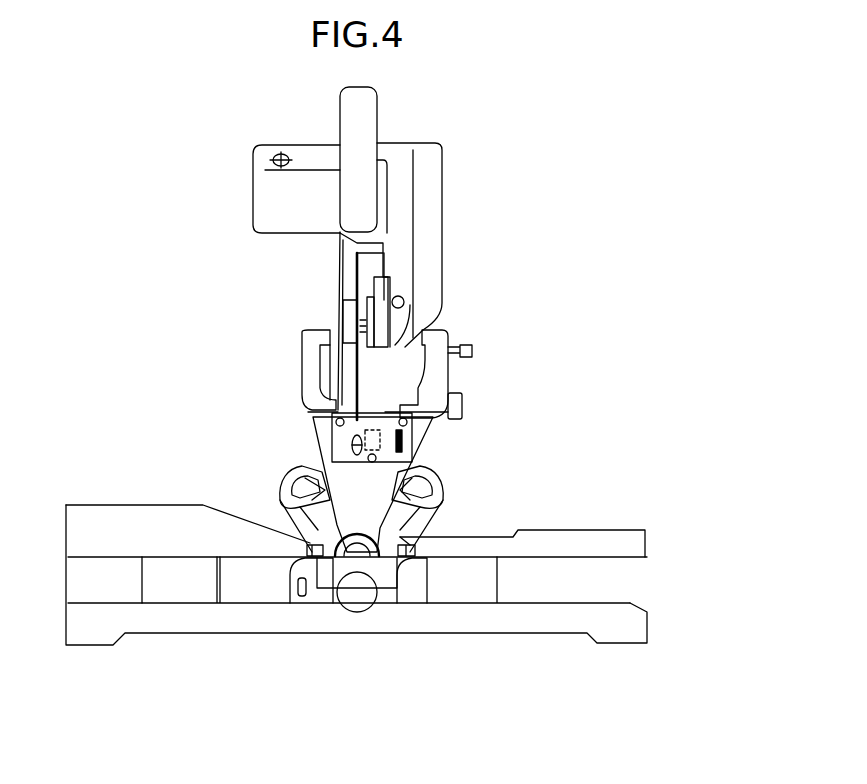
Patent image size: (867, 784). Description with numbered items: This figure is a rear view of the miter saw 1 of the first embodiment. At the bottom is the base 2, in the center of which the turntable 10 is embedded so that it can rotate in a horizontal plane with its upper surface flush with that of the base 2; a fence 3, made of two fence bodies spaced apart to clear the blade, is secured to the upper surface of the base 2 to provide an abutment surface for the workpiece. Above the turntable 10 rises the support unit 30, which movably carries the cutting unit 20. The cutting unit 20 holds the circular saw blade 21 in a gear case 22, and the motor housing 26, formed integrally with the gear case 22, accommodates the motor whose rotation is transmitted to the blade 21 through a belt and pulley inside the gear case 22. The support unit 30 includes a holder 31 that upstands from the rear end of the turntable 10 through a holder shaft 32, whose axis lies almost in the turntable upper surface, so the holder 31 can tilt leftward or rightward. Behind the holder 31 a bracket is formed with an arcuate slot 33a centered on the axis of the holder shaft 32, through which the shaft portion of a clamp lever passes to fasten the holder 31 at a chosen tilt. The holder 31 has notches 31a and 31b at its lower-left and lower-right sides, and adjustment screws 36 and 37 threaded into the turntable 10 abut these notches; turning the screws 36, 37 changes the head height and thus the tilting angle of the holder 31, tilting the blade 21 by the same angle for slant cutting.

The miter saw 1 is at (566, 151).
The base 2 is at (483, 623).
The fence 3 is at (133, 513).
The turntable 10 is at (480, 568).
The cutting unit 20 is at (320, 134).
The circular saw blade 21 is at (343, 273).
The gear case 22 is at (432, 300).
The motor housing 26 is at (262, 202).
The support unit 30 is at (447, 445).
The holder 31 is at (318, 448).
The notch 31a is at (310, 520).
The notch 31b is at (438, 493).
The holder shaft 32 is at (432, 528).
The arcuate slot 33a is at (282, 495).
The adjustment screw 36 is at (303, 548).
The adjustment screw 37 is at (417, 558).